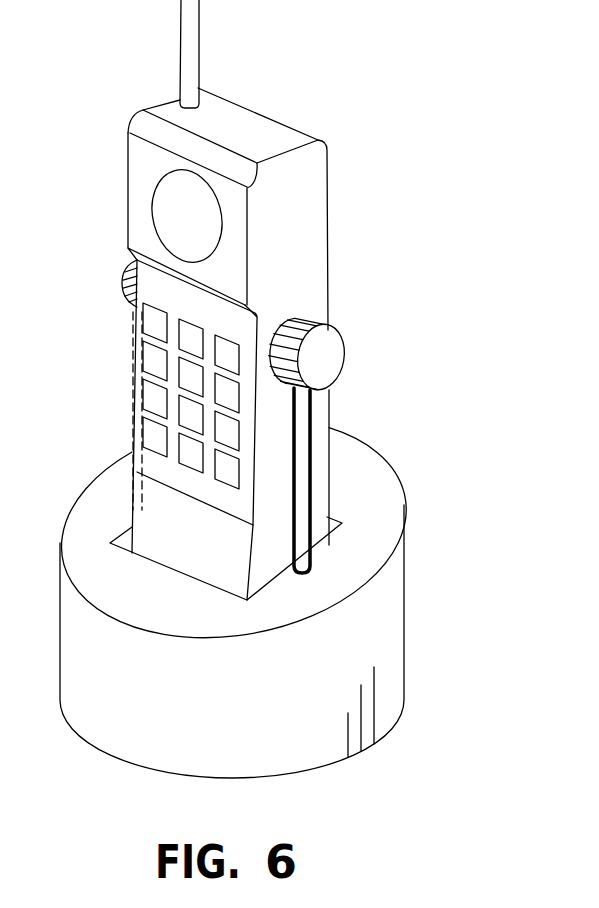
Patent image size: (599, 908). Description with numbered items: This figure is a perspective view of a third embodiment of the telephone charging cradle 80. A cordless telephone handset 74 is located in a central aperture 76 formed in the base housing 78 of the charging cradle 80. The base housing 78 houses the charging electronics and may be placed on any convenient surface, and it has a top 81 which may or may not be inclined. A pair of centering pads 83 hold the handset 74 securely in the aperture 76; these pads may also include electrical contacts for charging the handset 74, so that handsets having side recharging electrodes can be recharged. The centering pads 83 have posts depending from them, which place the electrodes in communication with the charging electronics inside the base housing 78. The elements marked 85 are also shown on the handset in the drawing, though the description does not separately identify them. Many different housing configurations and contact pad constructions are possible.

The charging cradle 80 is at (240, 300).
The cordless telephone handset 74 is at (308, 237).
The centering pads 83 is at (130, 290).
The guide rail 85 is at (133, 355).
The central aperture 76 is at (325, 530).
The top 81 is at (393, 517).
The base housing 78 is at (264, 603).